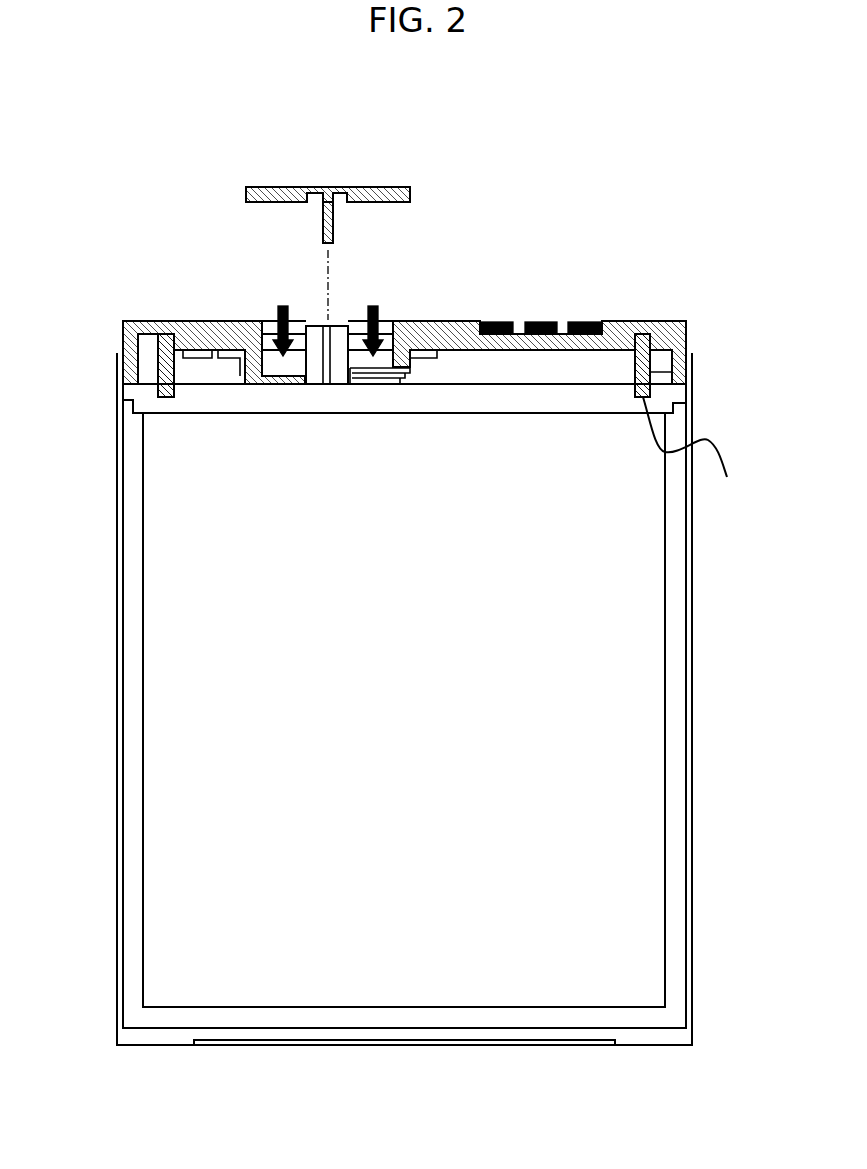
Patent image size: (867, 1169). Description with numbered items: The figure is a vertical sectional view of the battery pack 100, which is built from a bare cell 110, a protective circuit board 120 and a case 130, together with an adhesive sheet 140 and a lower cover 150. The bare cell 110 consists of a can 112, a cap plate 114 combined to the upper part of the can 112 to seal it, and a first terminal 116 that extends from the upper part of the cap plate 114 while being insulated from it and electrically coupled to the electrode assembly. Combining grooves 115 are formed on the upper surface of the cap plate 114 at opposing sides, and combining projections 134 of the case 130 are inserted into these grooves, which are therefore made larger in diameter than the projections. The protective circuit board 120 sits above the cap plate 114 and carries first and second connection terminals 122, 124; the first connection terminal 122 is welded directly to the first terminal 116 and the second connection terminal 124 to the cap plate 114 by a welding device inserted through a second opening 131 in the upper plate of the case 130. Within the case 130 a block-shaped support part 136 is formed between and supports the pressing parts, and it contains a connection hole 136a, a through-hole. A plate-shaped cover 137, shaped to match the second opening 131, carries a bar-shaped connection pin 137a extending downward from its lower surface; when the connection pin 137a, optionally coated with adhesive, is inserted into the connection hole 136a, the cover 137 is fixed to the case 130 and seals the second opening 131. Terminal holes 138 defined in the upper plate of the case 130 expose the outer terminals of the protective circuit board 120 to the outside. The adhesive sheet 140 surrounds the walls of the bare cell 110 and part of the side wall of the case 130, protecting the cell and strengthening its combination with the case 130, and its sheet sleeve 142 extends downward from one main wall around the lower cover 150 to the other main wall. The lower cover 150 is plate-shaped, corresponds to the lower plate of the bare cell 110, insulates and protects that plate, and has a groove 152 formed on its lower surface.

The battery pack 100 is at (127, 163).
The bare cell 110 is at (695, 556).
The can 112 is at (673, 627).
The cap plate 114 is at (675, 393).
The combining grooves 115 is at (700, 451).
The first terminal 116 is at (380, 387).
The protective circuit board 120 is at (188, 320).
The first connection terminal 122 is at (423, 366).
The second connection terminal 124 is at (238, 378).
The case 130 is at (683, 311).
The second opening 131 is at (393, 329).
The combining projections 134 is at (157, 368).
The support part 136 is at (310, 325).
The connection hole 136a is at (327, 387).
The cover 137 is at (374, 186).
The connection pin 137a is at (320, 221).
The terminal holes 138 is at (590, 320).
The adhesive sheet 140 is at (697, 980).
The sheet sleeve 142 is at (525, 1048).
The lower cover 150 is at (664, 1042).
The groove 152 is at (610, 1046).